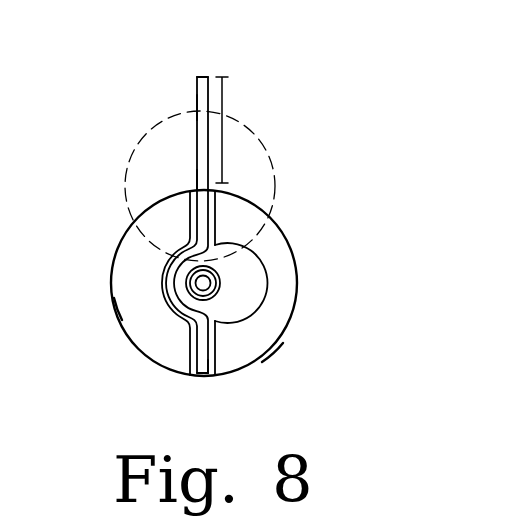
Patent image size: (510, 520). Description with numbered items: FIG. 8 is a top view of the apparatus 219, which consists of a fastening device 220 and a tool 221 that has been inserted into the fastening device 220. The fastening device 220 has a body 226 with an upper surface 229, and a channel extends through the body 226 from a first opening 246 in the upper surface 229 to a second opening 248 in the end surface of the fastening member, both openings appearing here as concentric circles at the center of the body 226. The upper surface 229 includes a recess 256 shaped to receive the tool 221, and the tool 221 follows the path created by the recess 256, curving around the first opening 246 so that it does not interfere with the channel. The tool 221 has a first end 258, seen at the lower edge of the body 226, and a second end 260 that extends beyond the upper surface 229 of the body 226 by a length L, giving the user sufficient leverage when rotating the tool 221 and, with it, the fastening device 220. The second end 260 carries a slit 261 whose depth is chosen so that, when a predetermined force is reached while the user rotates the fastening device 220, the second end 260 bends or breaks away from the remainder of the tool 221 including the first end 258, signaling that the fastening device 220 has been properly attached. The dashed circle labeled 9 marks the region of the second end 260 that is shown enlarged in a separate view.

The apparatus 219 is at (352, 175).
The fastening device 220 is at (308, 267).
The tool 221 is at (186, 83).
The body 226 is at (272, 345).
The upper surface 229 is at (121, 311).
The first opening 246 is at (245, 288).
The second opening 248 is at (204, 283).
The recess 256 is at (192, 374).
The first end 258 is at (216, 373).
The second end 260 is at (196, 108).
The slit 261 is at (196, 182).
The circle of radius 9 is at (262, 143).
The length L is at (223, 130).